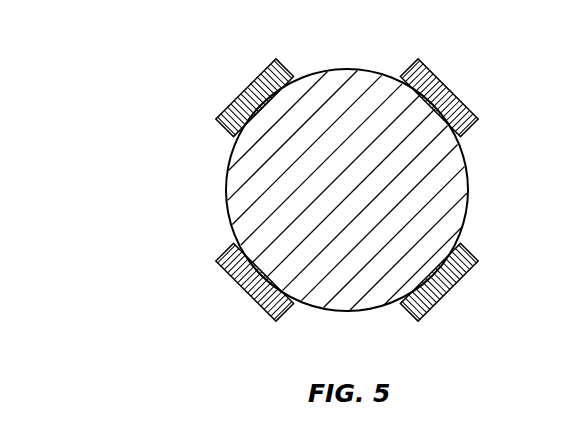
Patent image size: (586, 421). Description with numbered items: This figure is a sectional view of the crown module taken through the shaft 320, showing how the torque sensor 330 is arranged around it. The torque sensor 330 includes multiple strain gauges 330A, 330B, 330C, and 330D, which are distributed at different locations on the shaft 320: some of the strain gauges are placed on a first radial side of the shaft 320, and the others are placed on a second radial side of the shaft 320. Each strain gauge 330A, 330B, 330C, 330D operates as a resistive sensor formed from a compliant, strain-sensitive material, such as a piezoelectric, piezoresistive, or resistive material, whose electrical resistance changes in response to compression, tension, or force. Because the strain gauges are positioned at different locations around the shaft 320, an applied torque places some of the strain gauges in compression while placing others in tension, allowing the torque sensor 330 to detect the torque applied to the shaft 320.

The torque sensor 330 is at (103, 25).
The shaft 320 is at (349, 290).
The strain gauge 330A is at (244, 88).
The strain gauge 330B is at (241, 296).
The strain gauge 330C is at (450, 86).
The strain gauge 330D is at (455, 296).